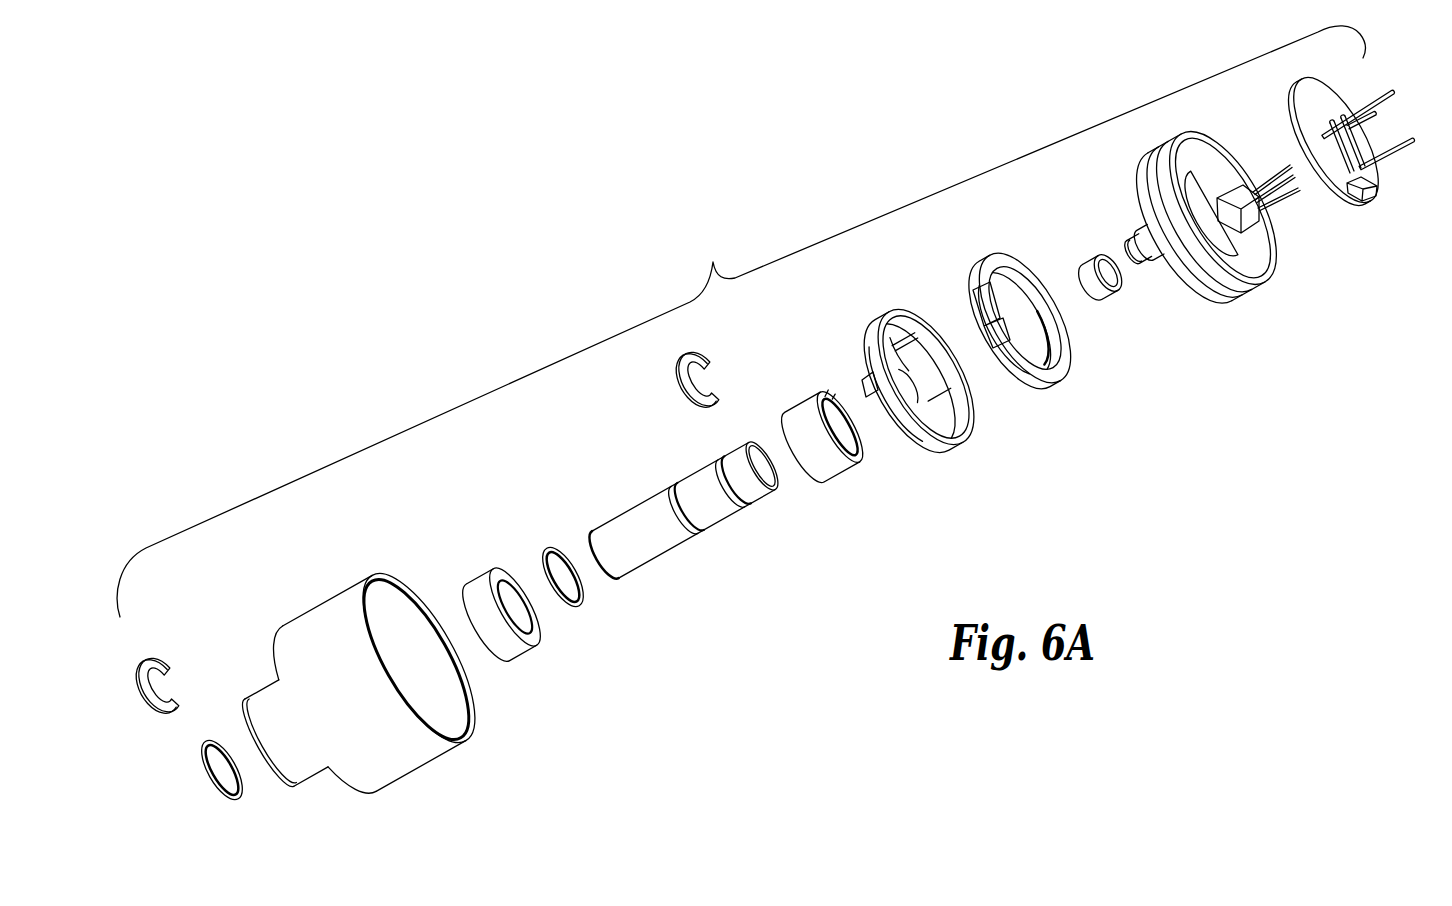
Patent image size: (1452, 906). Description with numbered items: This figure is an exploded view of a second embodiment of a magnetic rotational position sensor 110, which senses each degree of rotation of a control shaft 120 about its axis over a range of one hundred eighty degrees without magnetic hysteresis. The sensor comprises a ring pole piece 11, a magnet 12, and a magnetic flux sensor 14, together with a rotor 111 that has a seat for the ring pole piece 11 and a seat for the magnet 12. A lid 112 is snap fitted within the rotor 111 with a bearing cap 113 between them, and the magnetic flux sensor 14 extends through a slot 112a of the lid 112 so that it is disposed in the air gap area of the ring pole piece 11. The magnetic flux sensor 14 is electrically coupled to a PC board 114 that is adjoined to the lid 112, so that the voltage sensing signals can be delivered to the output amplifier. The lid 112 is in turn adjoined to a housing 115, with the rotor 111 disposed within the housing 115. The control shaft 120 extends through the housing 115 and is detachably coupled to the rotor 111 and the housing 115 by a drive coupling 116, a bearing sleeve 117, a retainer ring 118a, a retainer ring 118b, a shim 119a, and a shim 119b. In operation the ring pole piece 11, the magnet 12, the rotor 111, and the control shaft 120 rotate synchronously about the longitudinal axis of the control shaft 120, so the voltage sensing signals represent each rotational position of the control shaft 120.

The magnetic rotational position sensor 110 is at (741, 321).
The retainer ring 118a is at (163, 662).
The retainer ring 118b is at (707, 357).
The shim 119a is at (208, 785).
The shim 119b is at (584, 600).
The housing 115 is at (333, 607).
The bearing sleeve 117 is at (510, 643).
The control shaft 120 is at (663, 541).
The drive coupling 116 is at (834, 463).
The rotor 111 is at (947, 446).
The ring pole piece 11 is at (1064, 369).
The magnet 12 is at (984, 268).
The bearing cap 113 is at (1104, 292).
The lid 112 is at (1233, 298).
The slot 112a is at (1204, 148).
The magnetic flux sensor 14 is at (1267, 240).
The PC board 114 is at (1373, 205).